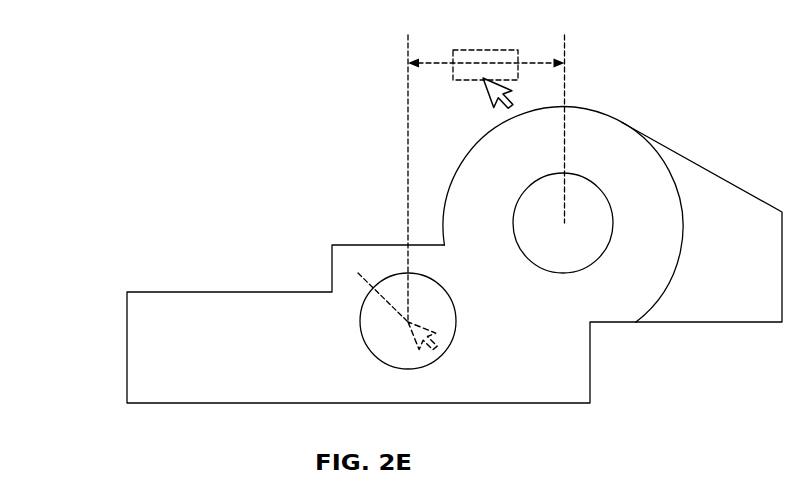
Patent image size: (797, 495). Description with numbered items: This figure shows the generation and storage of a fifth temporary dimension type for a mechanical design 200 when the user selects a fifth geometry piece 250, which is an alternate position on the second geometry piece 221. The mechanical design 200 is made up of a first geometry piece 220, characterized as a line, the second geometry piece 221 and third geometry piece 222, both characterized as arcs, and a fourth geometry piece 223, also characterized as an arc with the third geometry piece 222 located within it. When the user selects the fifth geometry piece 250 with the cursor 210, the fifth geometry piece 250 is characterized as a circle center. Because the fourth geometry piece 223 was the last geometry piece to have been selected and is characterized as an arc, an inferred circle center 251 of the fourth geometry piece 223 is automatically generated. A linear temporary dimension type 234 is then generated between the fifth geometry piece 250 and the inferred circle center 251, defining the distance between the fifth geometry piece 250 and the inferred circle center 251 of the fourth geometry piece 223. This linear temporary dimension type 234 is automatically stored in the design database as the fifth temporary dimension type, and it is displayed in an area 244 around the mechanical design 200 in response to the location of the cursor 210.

The mechanical design 200 is at (104, 128).
The cursor 210 is at (486, 89).
The first geometry piece 220 is at (127, 338).
The second geometry piece 221 is at (443, 354).
The third geometry piece 222 is at (575, 175).
The fourth geometry piece 223 is at (683, 233).
The linear temporary dimension type 234 is at (491, 49).
The area 244 is at (563, 100).
The fifth geometry piece 250 is at (375, 287).
The inferred circle center 251 is at (600, 132).